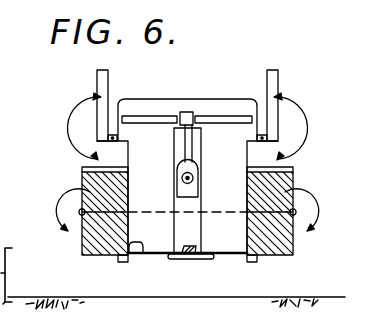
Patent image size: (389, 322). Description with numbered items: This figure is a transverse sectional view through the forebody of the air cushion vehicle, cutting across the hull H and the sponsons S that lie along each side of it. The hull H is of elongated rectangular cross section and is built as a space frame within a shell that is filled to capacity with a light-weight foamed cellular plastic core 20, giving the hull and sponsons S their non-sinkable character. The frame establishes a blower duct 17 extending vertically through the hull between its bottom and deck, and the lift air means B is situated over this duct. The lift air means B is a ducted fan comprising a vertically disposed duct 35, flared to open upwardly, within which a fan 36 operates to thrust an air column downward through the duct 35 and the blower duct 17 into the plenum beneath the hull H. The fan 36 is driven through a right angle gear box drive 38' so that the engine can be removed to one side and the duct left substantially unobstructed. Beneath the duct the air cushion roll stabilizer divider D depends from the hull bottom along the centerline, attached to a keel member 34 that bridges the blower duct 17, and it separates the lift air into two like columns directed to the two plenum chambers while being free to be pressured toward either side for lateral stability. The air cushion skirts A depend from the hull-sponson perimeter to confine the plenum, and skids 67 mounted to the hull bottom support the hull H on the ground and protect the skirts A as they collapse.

The air cushion skirt A is at (74, 141).
The lift air means B is at (197, 95).
The sponson S is at (78, 175).
The hull H is at (297, 237).
The foamed cellular plastic core 20 is at (80, 200).
The duct 35 is at (173, 190).
The fan 36 is at (229, 115).
The right angle gear box drive 38' is at (208, 161).
The keel member 34 is at (196, 248).
The blower duct 17 is at (134, 255).
The air cushion roll stabilizer divider D is at (192, 259).
The skid 67 is at (118, 262).